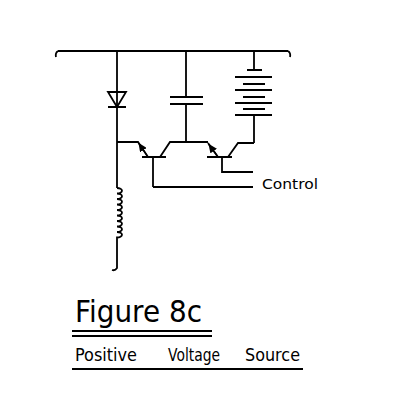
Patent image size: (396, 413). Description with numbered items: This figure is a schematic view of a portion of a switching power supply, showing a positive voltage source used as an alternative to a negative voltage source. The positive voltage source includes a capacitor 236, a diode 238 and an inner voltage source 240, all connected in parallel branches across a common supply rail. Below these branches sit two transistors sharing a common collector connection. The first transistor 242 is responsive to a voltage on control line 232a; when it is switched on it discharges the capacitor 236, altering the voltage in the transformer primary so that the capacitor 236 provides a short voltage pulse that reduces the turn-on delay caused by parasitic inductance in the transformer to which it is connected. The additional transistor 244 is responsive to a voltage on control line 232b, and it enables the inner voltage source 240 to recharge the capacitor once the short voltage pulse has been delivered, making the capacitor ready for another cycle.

The capacitor 236 is at (106, 101).
The diode 238 is at (177, 88).
The inner voltage source 240 is at (277, 93).
The transistor 242 is at (139, 164).
The additional transistor 244 is at (240, 152).
The control line 232a is at (152, 190).
The control line 232b is at (210, 191).